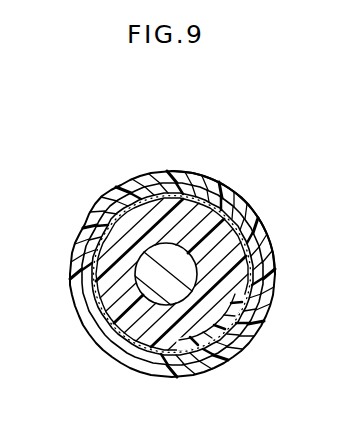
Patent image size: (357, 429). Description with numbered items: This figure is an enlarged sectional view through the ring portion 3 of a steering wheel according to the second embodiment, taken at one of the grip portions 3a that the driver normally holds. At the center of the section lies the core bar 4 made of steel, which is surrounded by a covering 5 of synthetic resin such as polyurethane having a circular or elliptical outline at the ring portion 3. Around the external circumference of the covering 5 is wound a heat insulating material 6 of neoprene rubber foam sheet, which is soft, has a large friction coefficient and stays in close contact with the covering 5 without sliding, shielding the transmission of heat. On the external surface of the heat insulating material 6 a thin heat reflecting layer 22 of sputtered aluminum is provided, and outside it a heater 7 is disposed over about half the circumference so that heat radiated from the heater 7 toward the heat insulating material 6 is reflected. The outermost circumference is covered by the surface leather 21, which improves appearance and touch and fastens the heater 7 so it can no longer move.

The ring portion 3 is at (178, 168).
The grip portion 3a is at (243, 206).
The surface leather 21 is at (128, 181).
The core bar 4 is at (147, 262).
The covering 5 is at (97, 291).
The heat insulating material 6 is at (246, 252).
The heat reflecting layer 22 is at (258, 308).
The heater 7 is at (247, 333).